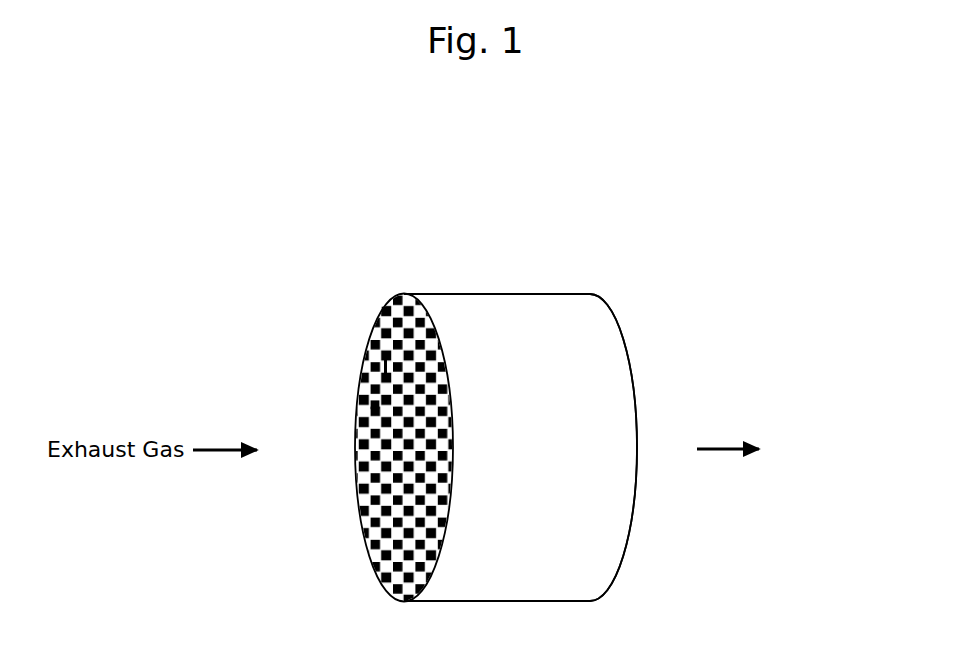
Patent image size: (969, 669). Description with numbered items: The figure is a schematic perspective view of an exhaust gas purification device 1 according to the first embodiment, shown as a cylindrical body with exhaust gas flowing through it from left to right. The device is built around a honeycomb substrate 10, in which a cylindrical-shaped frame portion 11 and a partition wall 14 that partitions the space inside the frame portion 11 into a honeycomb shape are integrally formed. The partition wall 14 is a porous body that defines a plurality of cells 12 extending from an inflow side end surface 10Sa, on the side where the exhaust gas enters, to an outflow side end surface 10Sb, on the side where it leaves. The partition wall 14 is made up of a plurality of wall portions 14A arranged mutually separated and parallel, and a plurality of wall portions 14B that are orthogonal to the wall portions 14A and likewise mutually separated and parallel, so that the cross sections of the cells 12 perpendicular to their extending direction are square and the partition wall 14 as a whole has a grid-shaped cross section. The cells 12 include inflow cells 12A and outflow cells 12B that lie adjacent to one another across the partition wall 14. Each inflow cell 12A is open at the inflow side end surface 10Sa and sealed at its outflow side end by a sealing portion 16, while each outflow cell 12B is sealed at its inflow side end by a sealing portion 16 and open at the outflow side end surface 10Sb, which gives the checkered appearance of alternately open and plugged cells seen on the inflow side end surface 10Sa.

The exhaust gas purification device 1 is at (652, 247).
The honeycomb substrate 10 is at (620, 395).
The inflow side end surface 10Sa is at (346, 548).
The outflow side end surface 10Sb is at (650, 551).
The frame portion 11 is at (448, 293).
The cells 12 is at (306, 364).
The inflow cell 12A is at (388, 365).
The outflow cell 12B is at (388, 372).
The partition wall 14 is at (321, 294).
The wall portions 14A is at (384, 311).
The wall portions 14B is at (390, 322).
The sealing portion 16 is at (374, 405).